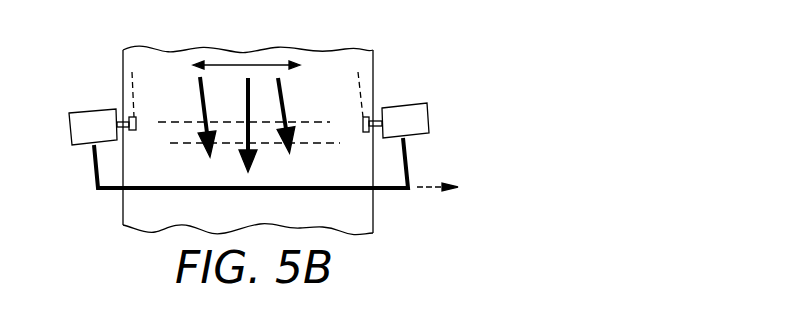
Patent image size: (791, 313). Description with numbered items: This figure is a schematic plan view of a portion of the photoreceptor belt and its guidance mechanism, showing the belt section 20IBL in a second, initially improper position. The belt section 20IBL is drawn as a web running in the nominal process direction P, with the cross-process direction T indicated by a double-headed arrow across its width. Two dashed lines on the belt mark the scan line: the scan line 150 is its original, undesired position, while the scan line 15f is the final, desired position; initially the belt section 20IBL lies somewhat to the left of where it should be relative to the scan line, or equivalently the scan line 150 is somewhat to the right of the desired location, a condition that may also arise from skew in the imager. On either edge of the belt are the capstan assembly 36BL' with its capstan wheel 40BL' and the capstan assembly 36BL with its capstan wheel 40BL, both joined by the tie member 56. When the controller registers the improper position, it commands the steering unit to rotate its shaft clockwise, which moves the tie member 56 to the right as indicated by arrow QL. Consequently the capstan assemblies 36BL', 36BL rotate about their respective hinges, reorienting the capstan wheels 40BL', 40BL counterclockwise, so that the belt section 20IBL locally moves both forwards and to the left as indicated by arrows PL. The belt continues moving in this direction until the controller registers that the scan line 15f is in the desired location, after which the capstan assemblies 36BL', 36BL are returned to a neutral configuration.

The belt section 20IBL is at (338, 63).
The capstan wheel 40BL' is at (164, 66).
The capstan assembly 36BL' is at (82, 100).
The capstan wheel 40BL is at (397, 81).
The capstan assembly 36BL is at (418, 101).
The tie member 56 is at (389, 188).
The cross-process direction T is at (263, 63).
The scan line (final position) 15f is at (307, 120).
The scan line (original position) 150 is at (225, 143).
The local direction of belt movement PL is at (198, 142).
The process direction P is at (258, 157).
The direction of tie member movement QL is at (427, 182).